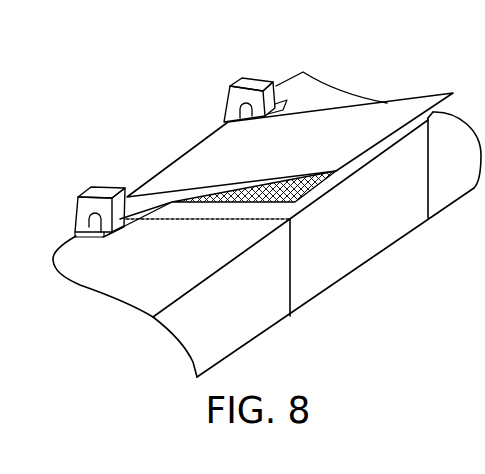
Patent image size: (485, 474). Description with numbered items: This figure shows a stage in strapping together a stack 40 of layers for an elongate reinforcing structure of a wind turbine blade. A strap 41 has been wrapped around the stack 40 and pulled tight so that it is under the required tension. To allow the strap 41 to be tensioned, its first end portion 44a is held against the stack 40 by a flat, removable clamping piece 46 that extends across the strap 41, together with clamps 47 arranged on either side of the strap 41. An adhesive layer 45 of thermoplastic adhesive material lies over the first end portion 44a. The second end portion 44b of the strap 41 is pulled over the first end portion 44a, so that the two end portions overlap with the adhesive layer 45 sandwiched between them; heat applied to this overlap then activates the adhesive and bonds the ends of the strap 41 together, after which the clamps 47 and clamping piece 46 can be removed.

The stack 40 is at (300, 88).
The strap 41 is at (393, 230).
The first end portion 44a is at (173, 212).
The second end portion 44b is at (328, 122).
The adhesive layer 45 is at (230, 204).
The removable clamping piece 46 is at (96, 220).
The clamps 47 is at (253, 83).